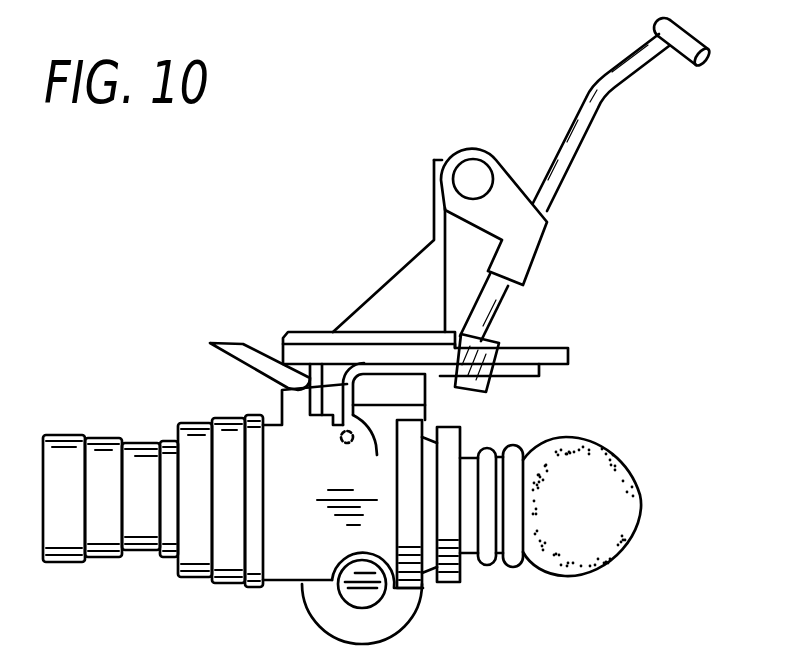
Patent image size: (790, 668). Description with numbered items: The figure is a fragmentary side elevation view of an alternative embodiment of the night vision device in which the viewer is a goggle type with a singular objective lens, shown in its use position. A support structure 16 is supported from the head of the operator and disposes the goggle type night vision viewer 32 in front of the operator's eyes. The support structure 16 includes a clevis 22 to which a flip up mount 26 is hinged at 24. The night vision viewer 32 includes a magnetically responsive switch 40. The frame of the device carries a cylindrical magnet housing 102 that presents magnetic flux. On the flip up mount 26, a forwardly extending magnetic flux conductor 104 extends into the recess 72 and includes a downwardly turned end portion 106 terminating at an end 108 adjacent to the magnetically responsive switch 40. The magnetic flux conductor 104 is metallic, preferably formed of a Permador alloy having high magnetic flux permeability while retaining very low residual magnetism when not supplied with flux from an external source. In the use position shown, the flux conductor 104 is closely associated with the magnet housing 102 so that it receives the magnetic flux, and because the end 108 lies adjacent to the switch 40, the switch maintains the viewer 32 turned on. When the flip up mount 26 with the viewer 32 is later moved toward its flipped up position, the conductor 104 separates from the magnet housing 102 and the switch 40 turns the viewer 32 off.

The support structure 16 is at (522, 130).
The clevis 22 is at (508, 210).
The hinge 24 is at (472, 176).
The flip up mount 26 is at (370, 284).
The night vision viewer 32 is at (238, 585).
The magnetically responsive switch 40 is at (337, 438).
The recess 72 is at (508, 402).
The cylindrical magnet housing 102 is at (500, 320).
The magnetic flux conductor 104 is at (518, 372).
The downwardly turned end portion 106 is at (283, 389).
The end 108 is at (373, 427).